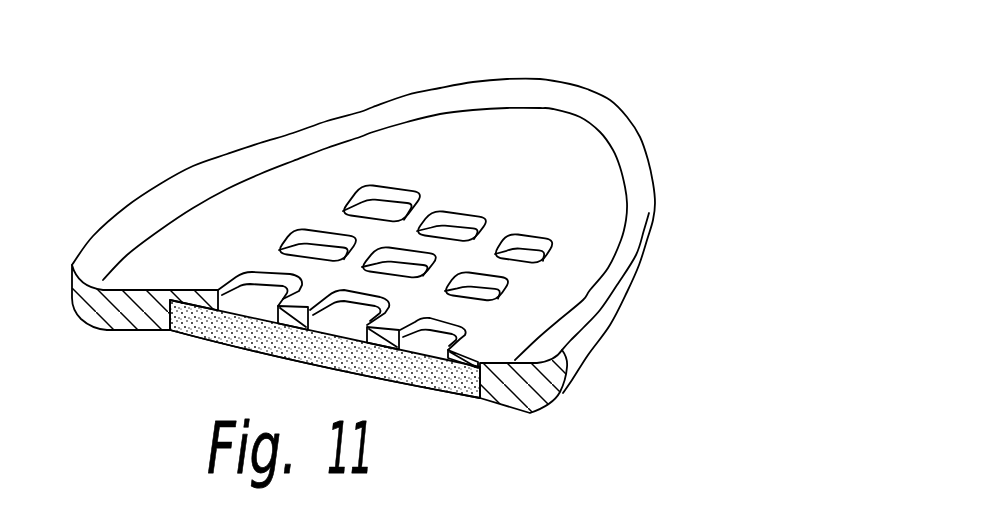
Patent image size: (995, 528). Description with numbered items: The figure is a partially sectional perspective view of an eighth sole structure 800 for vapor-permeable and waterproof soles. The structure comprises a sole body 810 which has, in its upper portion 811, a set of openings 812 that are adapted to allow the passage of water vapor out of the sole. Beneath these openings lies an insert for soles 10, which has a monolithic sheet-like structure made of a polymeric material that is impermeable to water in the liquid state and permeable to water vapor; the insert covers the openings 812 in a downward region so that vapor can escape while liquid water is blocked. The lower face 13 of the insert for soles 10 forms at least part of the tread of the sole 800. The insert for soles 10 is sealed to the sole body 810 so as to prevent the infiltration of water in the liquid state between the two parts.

The eighth sole structure 800 is at (696, 201).
The upper portion 811 is at (278, 190).
The openings 812 is at (323, 238).
The sole body 810 is at (93, 336).
The lower face 13 is at (318, 362).
The insert for soles 10 is at (401, 392).